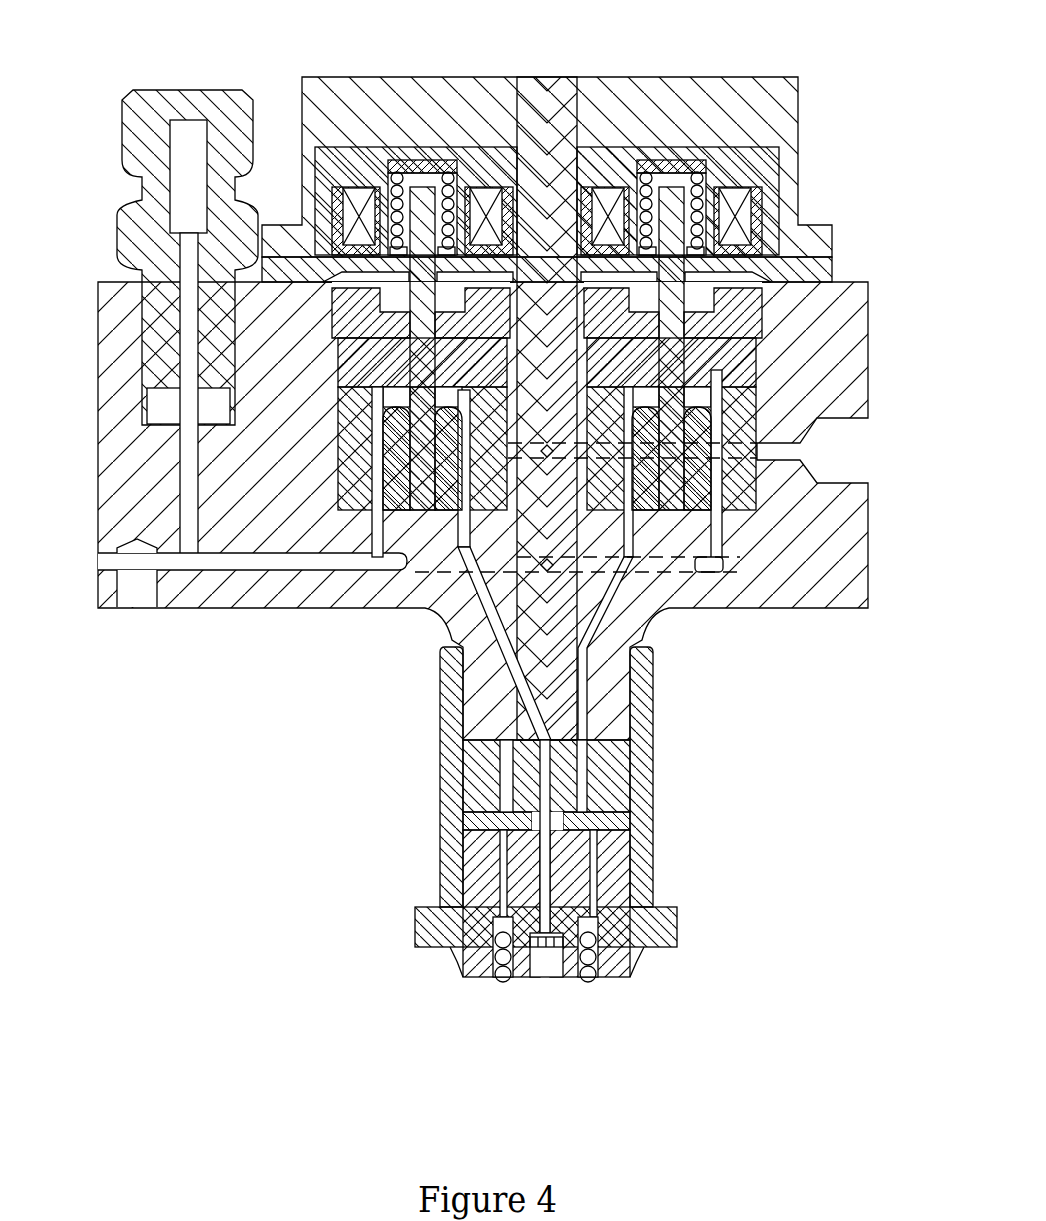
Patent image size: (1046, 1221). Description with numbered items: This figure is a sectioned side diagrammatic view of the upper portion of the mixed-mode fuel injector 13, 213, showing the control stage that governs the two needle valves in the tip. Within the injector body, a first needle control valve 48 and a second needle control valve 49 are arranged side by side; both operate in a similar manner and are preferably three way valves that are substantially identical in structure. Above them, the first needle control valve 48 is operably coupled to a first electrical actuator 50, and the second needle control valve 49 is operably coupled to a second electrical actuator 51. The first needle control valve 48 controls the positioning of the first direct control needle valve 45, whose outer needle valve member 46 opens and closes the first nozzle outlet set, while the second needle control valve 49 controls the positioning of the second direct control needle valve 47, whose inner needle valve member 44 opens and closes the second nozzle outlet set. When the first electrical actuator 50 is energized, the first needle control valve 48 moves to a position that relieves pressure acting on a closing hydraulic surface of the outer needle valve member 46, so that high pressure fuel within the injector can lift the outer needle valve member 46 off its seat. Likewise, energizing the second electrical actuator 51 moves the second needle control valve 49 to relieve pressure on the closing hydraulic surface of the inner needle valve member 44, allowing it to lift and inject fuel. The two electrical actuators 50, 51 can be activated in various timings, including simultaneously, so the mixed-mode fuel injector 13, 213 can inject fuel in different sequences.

The mixed-mode fuel injector 13 is at (488, 502).
The mixed-mode fuel injector 213 is at (488, 502).
The inner needle valve member 44 is at (546, 965).
The first direct control needle valve 45 is at (518, 969).
The outer needle valve member 46 is at (584, 941).
The second direct control needle valve 47 is at (493, 931).
The first needle control valve 48 is at (737, 329).
The second needle control valve 49 is at (353, 356).
The first electrical actuator 50 is at (724, 166).
The second electrical actuator 51 is at (487, 158).